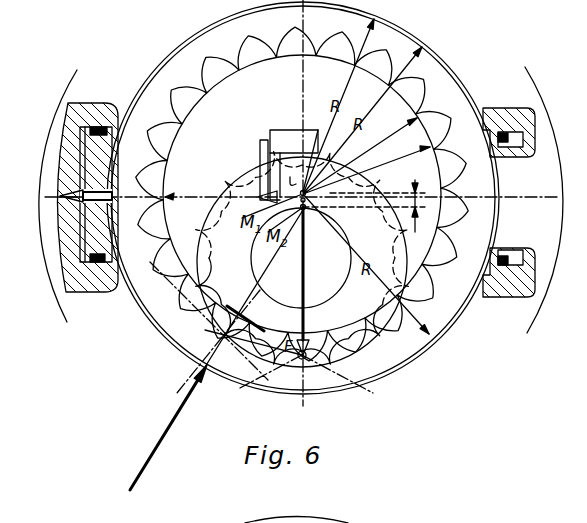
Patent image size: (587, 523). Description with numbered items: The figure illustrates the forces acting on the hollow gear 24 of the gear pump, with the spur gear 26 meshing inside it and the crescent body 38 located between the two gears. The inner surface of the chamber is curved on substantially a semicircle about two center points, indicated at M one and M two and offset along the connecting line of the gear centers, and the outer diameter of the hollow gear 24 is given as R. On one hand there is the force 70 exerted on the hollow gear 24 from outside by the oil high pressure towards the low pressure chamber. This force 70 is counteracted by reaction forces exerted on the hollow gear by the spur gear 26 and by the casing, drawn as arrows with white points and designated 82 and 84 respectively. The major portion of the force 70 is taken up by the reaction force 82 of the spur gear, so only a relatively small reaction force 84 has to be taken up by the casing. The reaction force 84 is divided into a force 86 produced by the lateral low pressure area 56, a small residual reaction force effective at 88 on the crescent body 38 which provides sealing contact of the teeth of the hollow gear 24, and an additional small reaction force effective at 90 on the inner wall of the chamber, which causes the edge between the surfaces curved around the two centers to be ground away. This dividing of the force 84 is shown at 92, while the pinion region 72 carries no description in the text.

The hollow gear 24 is at (443, 83).
The spur gear 26 is at (395, 226).
The crescent body 38 is at (302, 194).
The low pressure area 56 is at (73, 257).
The force 70 is at (184, 398).
The pinion disc 72 is at (303, 207).
The reaction force of the spur gear 82 is at (306, 290).
The reaction force of the casing 84 is at (301, 191).
The force produced by the low pressure field 86 is at (107, 199).
The residual reaction force on the crescent body 88 is at (168, 197).
The reaction force on the inner wall of the casing 90 is at (497, 200).
The force division 92 is at (266, 139).